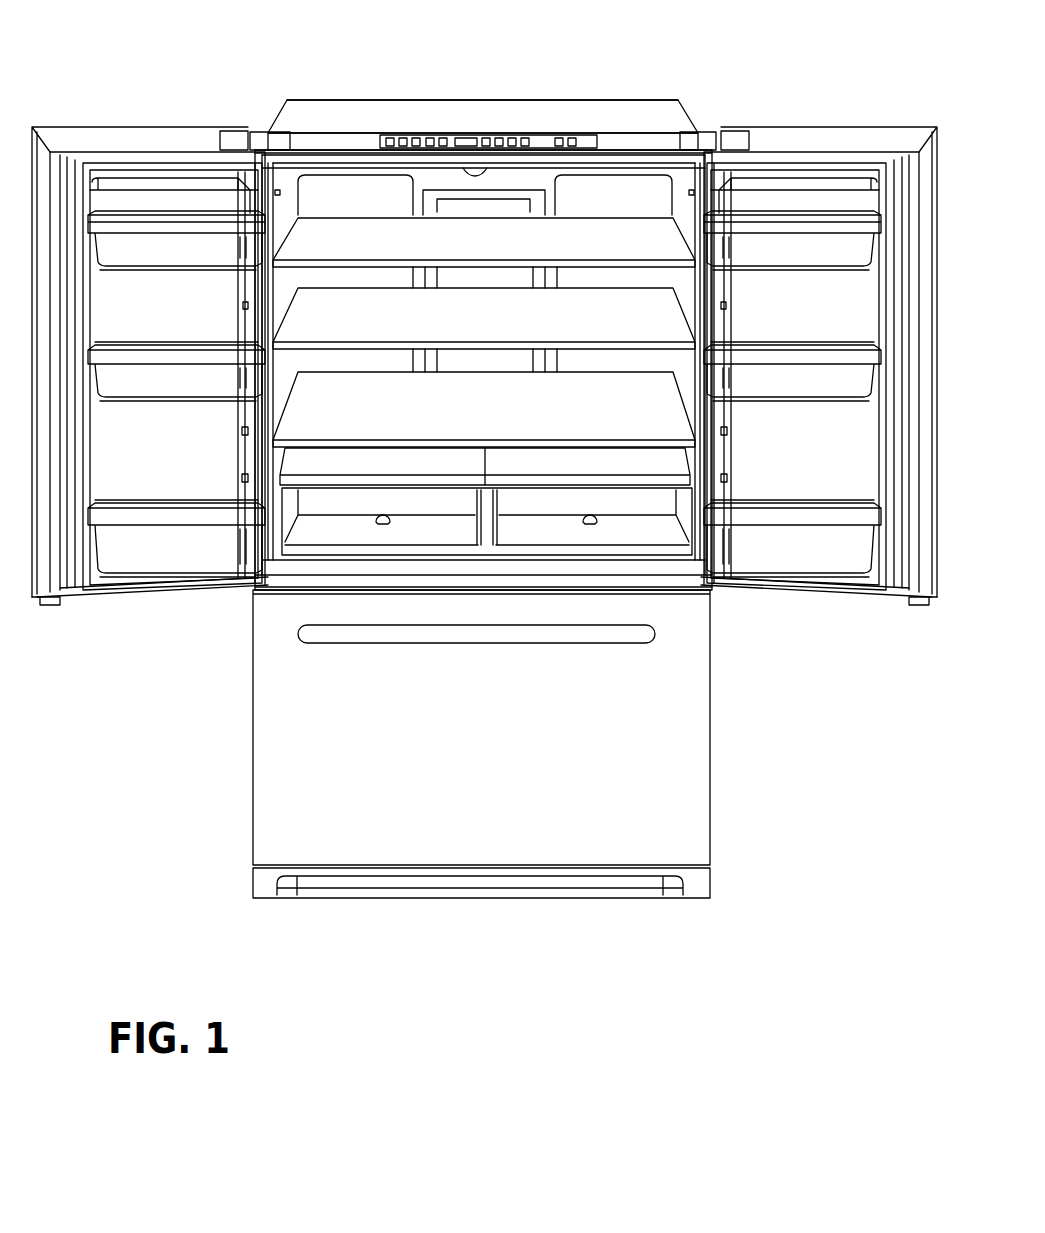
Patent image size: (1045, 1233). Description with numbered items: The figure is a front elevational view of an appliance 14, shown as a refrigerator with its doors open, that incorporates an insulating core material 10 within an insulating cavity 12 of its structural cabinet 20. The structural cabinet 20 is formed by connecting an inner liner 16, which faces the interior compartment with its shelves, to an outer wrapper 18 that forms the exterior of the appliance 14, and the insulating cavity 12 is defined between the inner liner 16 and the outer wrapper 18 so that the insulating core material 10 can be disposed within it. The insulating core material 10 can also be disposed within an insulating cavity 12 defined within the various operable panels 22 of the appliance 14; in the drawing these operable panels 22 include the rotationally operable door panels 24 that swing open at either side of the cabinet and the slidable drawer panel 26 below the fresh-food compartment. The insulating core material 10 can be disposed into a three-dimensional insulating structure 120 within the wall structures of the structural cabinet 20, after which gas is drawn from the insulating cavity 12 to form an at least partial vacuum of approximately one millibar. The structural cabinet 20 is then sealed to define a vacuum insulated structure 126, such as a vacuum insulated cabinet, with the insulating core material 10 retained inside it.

The insulating core material 10 is at (483, 112).
The insulating cavity 12 is at (685, 105).
The appliance 14 is at (383, 50).
The inner liner 16 is at (278, 388).
The outer wrapper 18 is at (607, 120).
The structural cabinet 20 is at (250, 108).
The operable panels 22 is at (848, 115).
The rotationally operable door panel 24 is at (925, 573).
The slidable drawer panel 26 is at (318, 772).
The three-dimensional insulating structure 120 is at (130, 600).
The vacuum insulated structure 126 is at (725, 671).